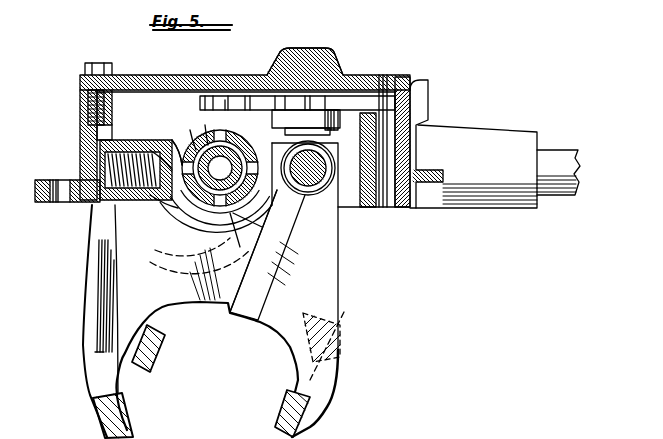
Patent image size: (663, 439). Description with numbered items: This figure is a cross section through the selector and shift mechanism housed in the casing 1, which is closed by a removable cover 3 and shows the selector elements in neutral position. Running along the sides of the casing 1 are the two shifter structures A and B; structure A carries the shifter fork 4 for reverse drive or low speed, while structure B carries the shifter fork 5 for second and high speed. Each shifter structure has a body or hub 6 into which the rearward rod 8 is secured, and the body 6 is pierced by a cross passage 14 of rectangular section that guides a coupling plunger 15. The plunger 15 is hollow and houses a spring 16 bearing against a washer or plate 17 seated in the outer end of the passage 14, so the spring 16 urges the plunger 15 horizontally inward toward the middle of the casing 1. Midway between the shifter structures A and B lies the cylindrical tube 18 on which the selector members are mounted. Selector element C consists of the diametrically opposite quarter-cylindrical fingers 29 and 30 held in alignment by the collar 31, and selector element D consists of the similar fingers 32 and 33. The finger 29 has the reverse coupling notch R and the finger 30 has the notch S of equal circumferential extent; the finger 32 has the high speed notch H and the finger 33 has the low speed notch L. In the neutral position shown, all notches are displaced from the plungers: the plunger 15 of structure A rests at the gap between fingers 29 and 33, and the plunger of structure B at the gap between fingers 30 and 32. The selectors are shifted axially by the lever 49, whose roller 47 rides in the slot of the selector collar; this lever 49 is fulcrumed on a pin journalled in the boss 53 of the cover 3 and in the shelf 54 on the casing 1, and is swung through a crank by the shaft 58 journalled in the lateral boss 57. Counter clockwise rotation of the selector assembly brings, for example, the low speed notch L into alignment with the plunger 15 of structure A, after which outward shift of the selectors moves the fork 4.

The casing 1 is at (400, 135).
The cover 3 is at (164, 82).
The shifter fork 4 is at (297, 312).
The shifter fork 5 is at (108, 292).
The body or hub part 6 is at (176, 148).
The rod or bar 8 is at (318, 172).
The cross passage 14 is at (150, 140).
The coupling plunger 15 is at (150, 198).
The spring 16 is at (150, 150).
The washer or plate 17 is at (105, 162).
The cylindrical tube 18 is at (218, 190).
The finger 29 is at (225, 96).
The finger 30 is at (178, 222).
The collar 31 is at (192, 132).
The finger 32 is at (205, 125).
The finger 33 is at (246, 258).
The abutment lug or roller 47 is at (235, 95).
The lever 49 is at (332, 105).
The boss 53 is at (322, 52).
The shelf 54 is at (405, 80).
The boss 57 is at (478, 145).
The shaft 58 is at (555, 160).
The shifter structure A is at (345, 200).
The shifter structure B is at (100, 203).
The high speed notch H is at (177, 130).
The low speed notch L is at (250, 222).
The reverse coupling notch R is at (240, 136).
The notch S is at (172, 212).